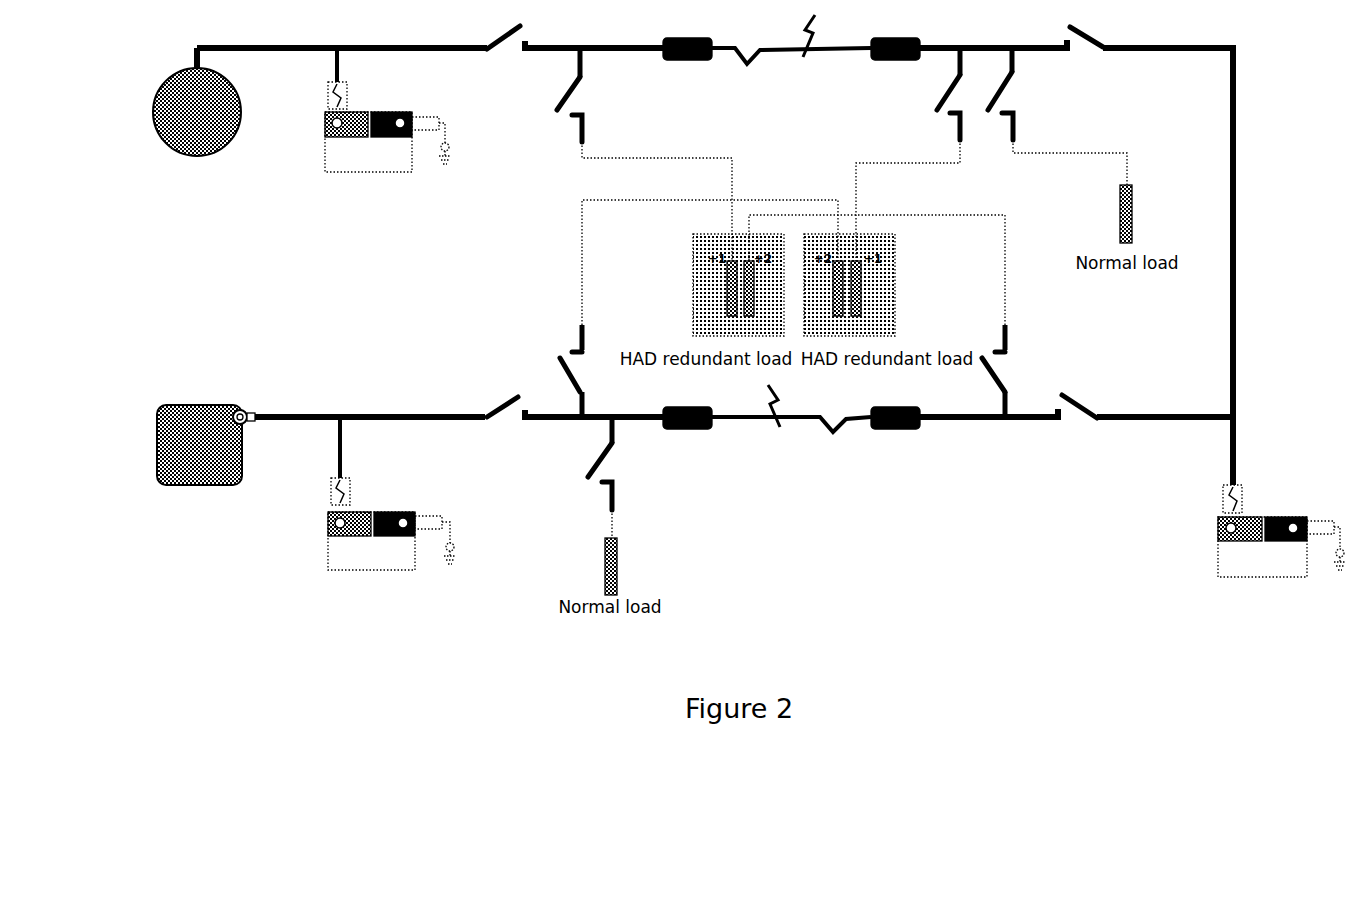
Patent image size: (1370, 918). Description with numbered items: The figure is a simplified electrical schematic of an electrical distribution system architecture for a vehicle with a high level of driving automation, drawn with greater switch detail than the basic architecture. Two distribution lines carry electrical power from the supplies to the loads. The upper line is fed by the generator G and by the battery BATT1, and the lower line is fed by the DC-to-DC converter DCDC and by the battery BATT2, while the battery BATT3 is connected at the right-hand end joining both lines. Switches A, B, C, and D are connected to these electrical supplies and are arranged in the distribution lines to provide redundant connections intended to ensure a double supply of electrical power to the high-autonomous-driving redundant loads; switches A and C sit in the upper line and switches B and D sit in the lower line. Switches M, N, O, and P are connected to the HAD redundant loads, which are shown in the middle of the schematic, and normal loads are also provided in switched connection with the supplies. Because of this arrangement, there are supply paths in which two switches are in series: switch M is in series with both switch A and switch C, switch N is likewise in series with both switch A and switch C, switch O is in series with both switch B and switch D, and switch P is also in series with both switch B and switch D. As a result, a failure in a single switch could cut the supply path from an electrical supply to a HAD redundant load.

The switch A is at (503, 56).
The switch B is at (502, 393).
The switch C is at (1086, 56).
The switch D is at (1080, 395).
The switch M is at (644, 154).
The switch N is at (908, 154).
The switch O is at (699, 308).
The switch P is at (877, 316).
The battery BATT1 is at (388, 110).
The battery BATT2 is at (392, 493).
The battery BATT3 is at (1282, 531).
The generator G is at (197, 112).
The DC-to-DC converter DCDC is at (206, 445).